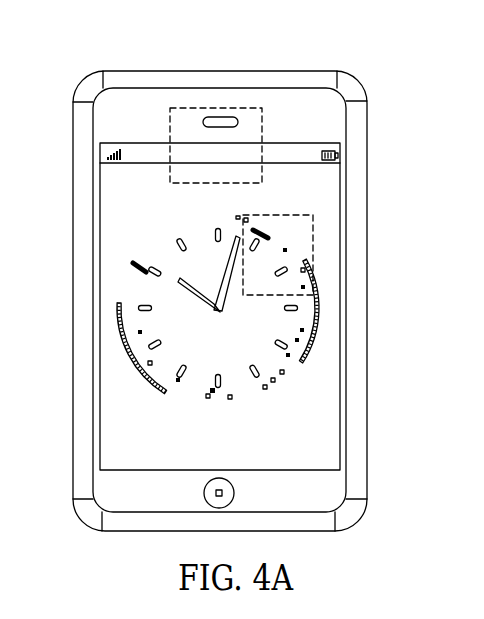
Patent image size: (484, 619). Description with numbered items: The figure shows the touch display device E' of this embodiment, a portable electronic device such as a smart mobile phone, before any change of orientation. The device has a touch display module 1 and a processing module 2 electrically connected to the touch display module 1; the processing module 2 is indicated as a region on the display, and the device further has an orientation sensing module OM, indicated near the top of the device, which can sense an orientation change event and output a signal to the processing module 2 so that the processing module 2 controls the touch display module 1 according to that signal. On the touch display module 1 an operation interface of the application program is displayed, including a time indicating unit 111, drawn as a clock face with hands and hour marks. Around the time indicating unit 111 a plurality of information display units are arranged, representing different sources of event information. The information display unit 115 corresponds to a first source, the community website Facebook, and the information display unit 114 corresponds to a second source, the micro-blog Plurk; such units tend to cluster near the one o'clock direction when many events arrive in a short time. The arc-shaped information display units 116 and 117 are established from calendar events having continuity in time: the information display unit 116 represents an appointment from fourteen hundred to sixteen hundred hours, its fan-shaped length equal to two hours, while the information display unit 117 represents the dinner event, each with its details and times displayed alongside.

The touch display module 1 is at (340, 186).
The processing module 2 is at (313, 237).
The time indicating unit 111 is at (133, 266).
The information display unit 114 is at (214, 393).
The information display unit 115 is at (209, 399).
The information display unit 116 is at (320, 305).
The information display unit 117 is at (125, 350).
The orientation sensing module OM is at (222, 108).
The touch display device E' is at (385, 52).